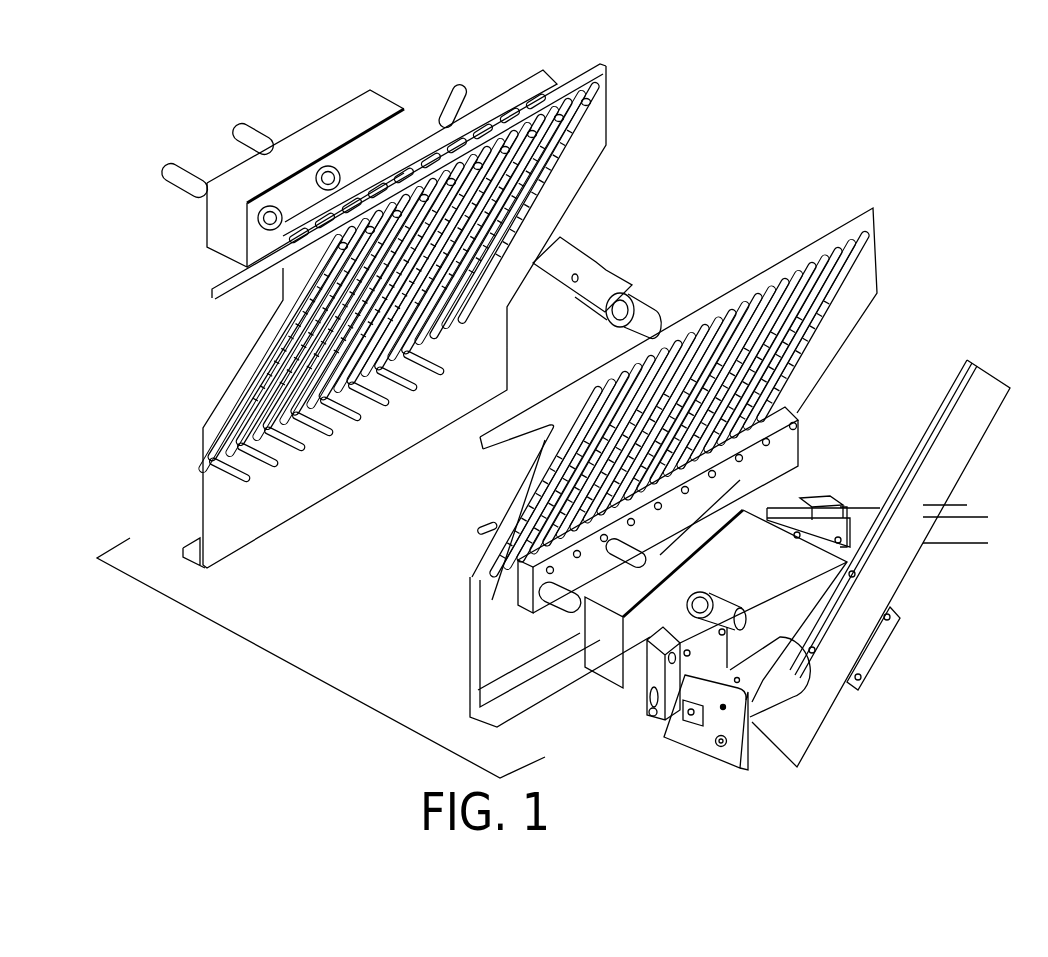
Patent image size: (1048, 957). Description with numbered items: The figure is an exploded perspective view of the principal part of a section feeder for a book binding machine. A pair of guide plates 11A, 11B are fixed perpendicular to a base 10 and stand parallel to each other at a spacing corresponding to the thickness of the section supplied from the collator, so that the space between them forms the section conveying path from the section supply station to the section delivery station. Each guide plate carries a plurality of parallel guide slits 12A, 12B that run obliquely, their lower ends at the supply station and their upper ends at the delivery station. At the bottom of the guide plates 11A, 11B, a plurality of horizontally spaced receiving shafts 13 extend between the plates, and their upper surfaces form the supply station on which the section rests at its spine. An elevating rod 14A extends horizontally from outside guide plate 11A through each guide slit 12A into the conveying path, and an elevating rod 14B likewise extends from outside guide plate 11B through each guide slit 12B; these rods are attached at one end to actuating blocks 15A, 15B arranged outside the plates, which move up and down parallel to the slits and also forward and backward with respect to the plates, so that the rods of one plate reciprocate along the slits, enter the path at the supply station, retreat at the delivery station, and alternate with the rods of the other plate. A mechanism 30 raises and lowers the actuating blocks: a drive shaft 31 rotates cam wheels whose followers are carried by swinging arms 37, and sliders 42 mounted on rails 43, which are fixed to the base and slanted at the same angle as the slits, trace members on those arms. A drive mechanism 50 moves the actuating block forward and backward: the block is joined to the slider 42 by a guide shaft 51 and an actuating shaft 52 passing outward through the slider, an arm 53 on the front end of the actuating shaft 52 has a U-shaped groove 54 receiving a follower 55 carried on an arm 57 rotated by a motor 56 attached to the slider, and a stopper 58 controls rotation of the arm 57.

The base 10 is at (312, 676).
The guide plate 11A is at (867, 265).
The guide plate 11B is at (598, 128).
The guide slits 12A is at (823, 317).
The guide slits 12B is at (545, 157).
The receiving shafts 13 is at (222, 488).
The elevating rod 14A is at (482, 536).
The elevating rod 14B is at (553, 88).
The actuating block 15A is at (488, 634).
The actuating block 15B is at (510, 85).
The mechanism for moving the actuating blocks 30 is at (923, 557).
The drive shaft 31 is at (650, 315).
The arms 37 is at (575, 270).
The sliders 42 is at (330, 120).
The rails 43 is at (450, 102).
The drive mechanism 50 is at (752, 775).
The guide shaft 51 is at (250, 130).
The actuating shaft 52 is at (178, 185).
The arm 53 is at (650, 667).
The U-shaped groove 54 is at (653, 703).
The follower 55 is at (683, 724).
The motor 56 is at (793, 690).
The arm 57 is at (747, 743).
The stopper 58 is at (658, 722).